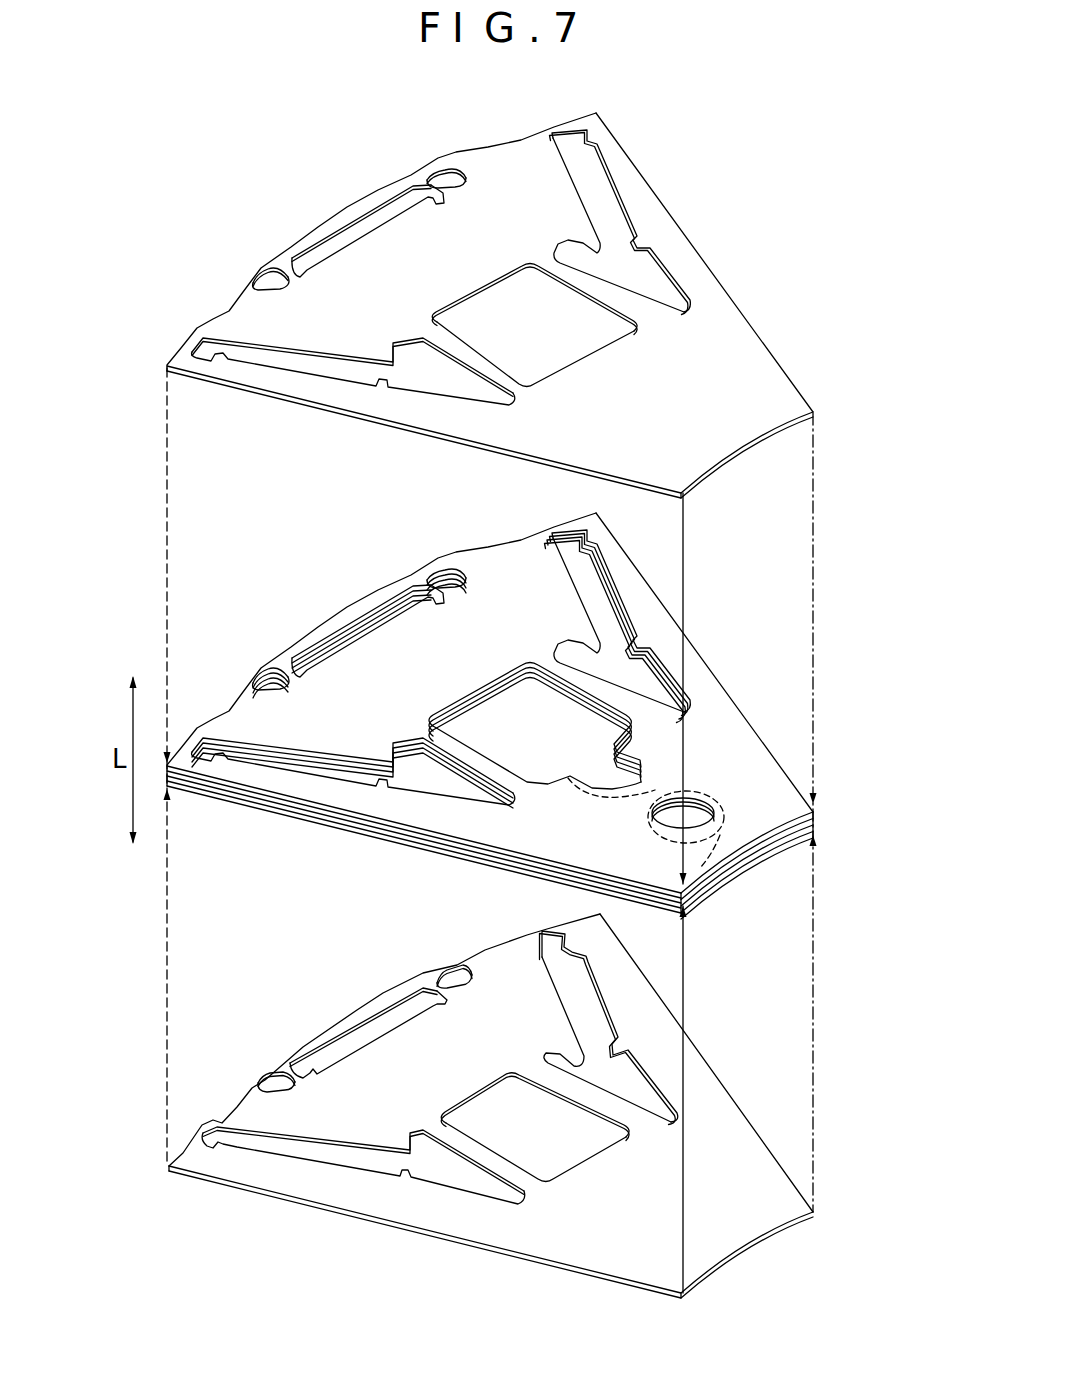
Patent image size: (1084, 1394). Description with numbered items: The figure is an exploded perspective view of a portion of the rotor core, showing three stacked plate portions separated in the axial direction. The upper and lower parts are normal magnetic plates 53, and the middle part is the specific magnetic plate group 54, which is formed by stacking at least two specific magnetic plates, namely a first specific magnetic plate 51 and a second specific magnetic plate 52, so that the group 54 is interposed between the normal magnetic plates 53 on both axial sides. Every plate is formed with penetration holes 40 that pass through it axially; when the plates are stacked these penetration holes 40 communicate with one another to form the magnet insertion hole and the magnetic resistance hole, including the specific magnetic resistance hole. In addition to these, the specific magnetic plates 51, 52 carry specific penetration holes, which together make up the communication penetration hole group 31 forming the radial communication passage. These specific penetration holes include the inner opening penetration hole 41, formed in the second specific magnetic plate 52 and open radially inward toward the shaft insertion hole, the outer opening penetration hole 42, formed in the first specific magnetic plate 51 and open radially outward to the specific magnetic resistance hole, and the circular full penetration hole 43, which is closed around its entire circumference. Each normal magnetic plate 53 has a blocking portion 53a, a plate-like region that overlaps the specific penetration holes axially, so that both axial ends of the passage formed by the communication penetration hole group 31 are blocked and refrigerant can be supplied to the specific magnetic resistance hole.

The penetration hole 40 is at (363, 233).
The normal magnetic plate 53 is at (612, 147).
The blocking portion 53a is at (658, 392).
The specific magnetic plate group 54 is at (697, 640).
The communication penetration hole group 31 is at (672, 776).
The outer opening penetration hole 42 is at (593, 770).
The full penetration hole 43 is at (640, 815).
The inner opening penetration hole 41 is at (728, 822).
The first specific magnetic plate 51 is at (815, 804).
The second specific magnetic plate 52 is at (815, 836).